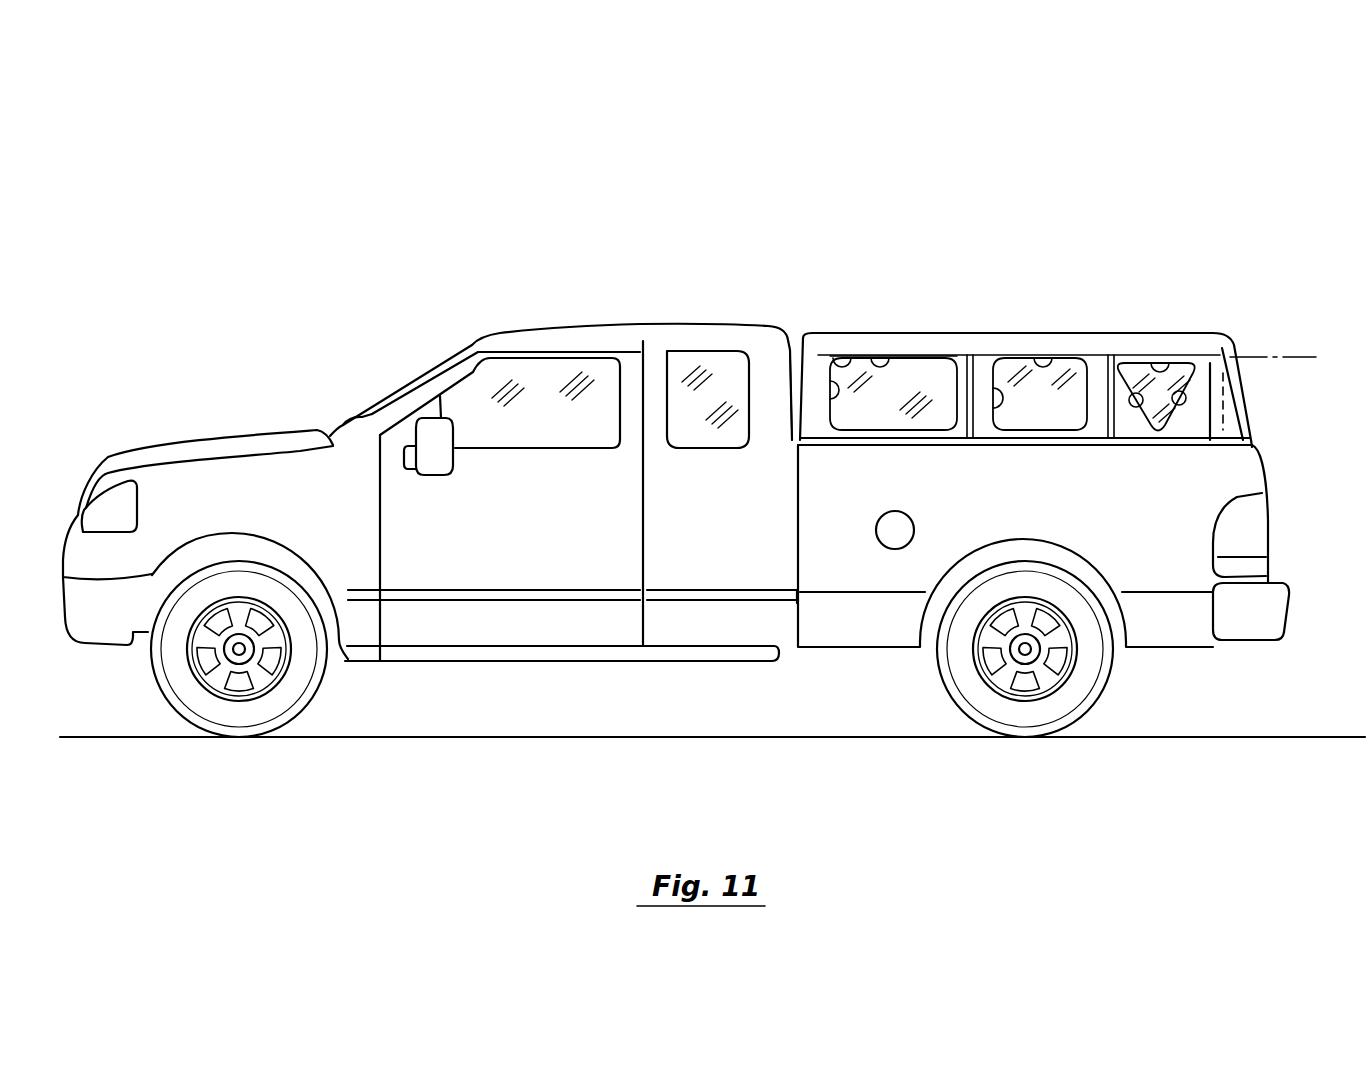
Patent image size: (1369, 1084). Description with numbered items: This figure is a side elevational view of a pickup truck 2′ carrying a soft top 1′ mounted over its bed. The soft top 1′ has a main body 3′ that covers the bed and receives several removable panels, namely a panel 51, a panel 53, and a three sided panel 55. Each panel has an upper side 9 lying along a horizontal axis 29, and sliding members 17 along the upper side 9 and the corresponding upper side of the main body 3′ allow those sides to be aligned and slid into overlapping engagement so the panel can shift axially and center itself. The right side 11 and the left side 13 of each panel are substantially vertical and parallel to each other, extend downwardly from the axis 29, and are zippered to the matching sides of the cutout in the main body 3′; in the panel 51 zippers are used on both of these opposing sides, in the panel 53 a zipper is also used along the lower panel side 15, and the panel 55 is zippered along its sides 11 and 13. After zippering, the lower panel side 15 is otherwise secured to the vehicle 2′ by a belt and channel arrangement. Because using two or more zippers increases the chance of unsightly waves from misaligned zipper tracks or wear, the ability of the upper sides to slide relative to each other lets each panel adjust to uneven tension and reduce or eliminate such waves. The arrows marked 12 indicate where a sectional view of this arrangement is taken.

The soft top 1′ is at (1089, 226).
The pickup truck 2′ is at (758, 523).
The main body 3′ is at (1138, 333).
The upper side 9 is at (878, 356).
The right side 11 is at (964, 378).
The section line 12 is at (900, 305).
The left side 13 is at (833, 392).
The lower panel side 15 is at (923, 433).
The sliding members 17 is at (852, 338).
The axis 29 is at (721, 352).
The panel 51 is at (946, 420).
The panel 53 is at (1069, 408).
The three sided panel 55 is at (1157, 436).